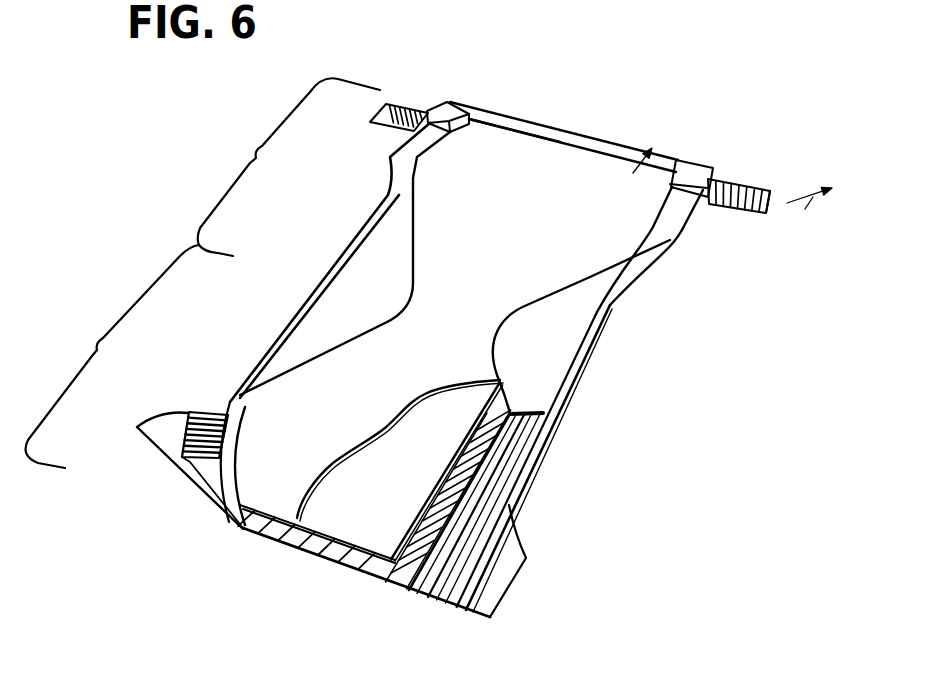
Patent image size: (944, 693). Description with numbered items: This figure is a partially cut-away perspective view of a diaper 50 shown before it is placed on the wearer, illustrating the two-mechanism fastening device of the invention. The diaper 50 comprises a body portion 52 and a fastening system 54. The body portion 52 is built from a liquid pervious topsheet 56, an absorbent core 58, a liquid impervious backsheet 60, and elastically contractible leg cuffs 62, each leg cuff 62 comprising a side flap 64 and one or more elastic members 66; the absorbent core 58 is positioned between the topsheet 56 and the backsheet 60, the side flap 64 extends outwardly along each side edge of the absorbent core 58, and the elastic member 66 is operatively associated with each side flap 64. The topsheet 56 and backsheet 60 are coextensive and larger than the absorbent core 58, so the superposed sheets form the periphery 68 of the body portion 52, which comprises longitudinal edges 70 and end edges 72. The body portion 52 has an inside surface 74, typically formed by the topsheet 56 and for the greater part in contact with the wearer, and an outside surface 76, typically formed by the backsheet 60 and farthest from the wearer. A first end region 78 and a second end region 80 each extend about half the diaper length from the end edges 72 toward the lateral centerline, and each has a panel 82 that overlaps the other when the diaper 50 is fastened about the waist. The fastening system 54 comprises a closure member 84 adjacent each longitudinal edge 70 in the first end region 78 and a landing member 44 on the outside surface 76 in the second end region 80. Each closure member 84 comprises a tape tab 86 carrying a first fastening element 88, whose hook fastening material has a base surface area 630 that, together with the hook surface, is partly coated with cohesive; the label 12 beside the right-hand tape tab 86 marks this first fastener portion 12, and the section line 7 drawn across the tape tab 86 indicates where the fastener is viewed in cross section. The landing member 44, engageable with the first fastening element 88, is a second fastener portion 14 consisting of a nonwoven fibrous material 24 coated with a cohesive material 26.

The section line 7- 7 is at (739, 162).
The mounting block 12 is at (727, 177).
The second fastener portion 14 is at (212, 409).
The nonwoven fibrous material 24 is at (186, 415).
The cohesive material 26 is at (185, 460).
The landing member 44 is at (173, 410).
The diaper 50 is at (635, 120).
The body portion 52 is at (615, 326).
The fastening system 54 is at (192, 462).
The topsheet 56 is at (303, 404).
The absorbent core 58 is at (352, 519).
The backsheet 60 is at (502, 563).
The leg cuffs 62 is at (584, 354).
The side flap 64 is at (533, 370).
The elastic members 66 is at (512, 453).
The periphery 68 is at (252, 535).
The longitudinal edges 70 is at (290, 320).
The end edges 72 is at (512, 117).
The inside surface 74 is at (535, 148).
The outside surface 76 is at (380, 583).
The first end region 78 is at (289, 167).
The second end region 80 is at (112, 356).
The panels 82 is at (681, 244).
The closure member 84 is at (429, 90).
The tape tab 86 is at (450, 112).
The first fastening element 88 is at (399, 95).
The base surface area 630 is at (755, 187).